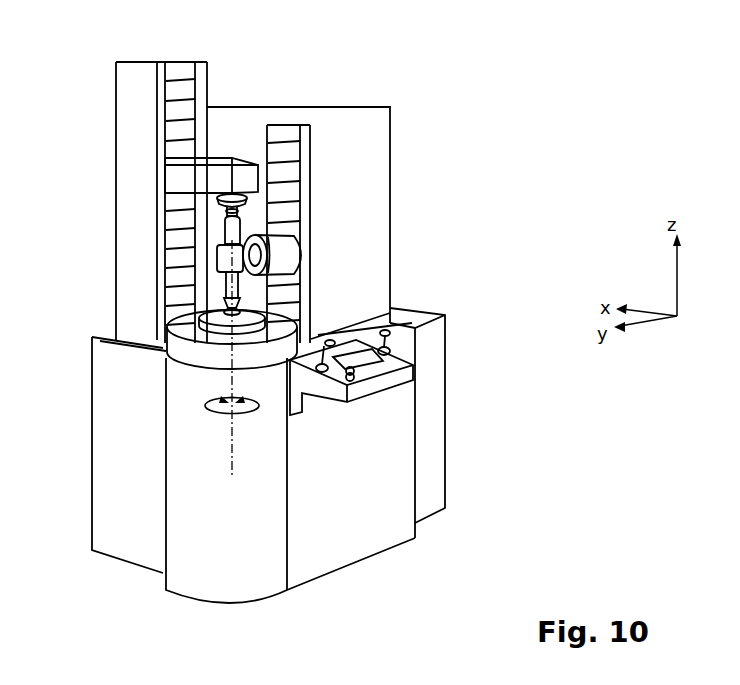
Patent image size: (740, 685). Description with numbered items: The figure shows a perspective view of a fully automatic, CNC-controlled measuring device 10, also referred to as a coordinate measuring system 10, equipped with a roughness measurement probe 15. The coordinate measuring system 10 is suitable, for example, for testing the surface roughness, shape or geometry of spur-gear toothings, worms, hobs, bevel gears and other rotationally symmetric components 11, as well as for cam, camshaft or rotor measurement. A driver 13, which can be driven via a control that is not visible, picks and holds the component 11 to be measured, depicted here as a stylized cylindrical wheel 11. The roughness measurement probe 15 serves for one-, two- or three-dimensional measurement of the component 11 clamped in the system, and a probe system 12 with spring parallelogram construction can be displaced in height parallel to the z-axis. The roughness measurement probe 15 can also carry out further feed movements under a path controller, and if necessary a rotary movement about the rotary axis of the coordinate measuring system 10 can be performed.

The measuring device 10 is at (437, 72).
The component 11 is at (217, 263).
The probe system 12 is at (284, 257).
The driver 13 is at (217, 320).
The roughness measurement probe 15 is at (263, 249).